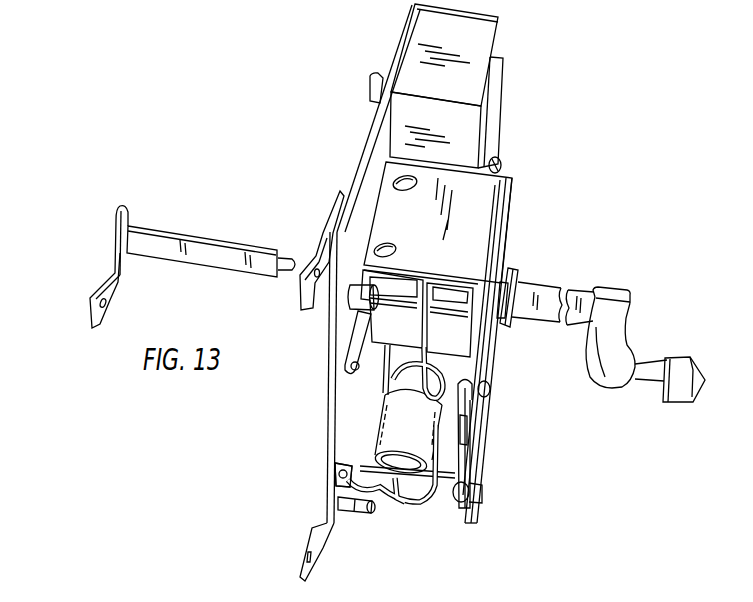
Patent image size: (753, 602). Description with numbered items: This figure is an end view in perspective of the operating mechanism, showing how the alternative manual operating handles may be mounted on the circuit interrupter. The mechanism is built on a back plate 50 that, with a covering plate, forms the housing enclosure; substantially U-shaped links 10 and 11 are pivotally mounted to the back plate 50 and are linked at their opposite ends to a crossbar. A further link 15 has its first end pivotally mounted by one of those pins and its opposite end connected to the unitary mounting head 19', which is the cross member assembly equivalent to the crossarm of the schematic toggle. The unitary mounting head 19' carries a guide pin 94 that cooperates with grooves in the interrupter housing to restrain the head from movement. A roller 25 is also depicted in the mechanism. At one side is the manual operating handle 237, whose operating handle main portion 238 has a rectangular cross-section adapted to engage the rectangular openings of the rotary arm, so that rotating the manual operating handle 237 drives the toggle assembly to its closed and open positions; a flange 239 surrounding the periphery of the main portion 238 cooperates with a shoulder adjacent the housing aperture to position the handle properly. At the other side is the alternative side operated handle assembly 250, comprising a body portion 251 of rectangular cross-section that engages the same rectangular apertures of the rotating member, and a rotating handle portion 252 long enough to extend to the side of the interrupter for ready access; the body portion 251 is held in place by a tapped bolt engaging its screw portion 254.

The unitary mounting head 19' is at (465, 86).
The link 15 is at (502, 116).
The guide pin 94 is at (502, 162).
The link 10 is at (341, 370).
The back plate 50 is at (338, 443).
The link 11 is at (334, 478).
The roller and spring 25 is at (380, 418).
The handle assembly 250 is at (193, 256).
The body portion 251 is at (252, 237).
The rotating handle portion 252 is at (104, 277).
The screw portion 254 is at (292, 256).
The flange 239 is at (517, 268).
The operating handle main portion 238 is at (577, 327).
The manual operating handle 237 is at (630, 298).